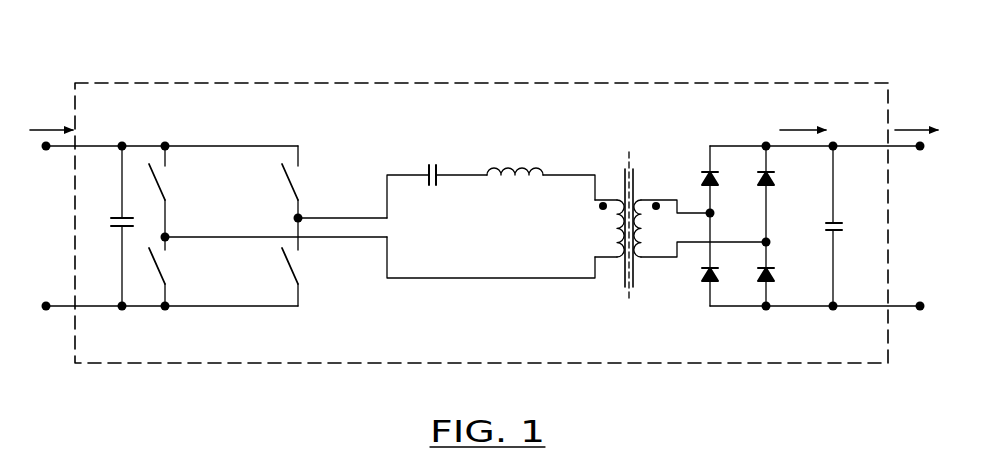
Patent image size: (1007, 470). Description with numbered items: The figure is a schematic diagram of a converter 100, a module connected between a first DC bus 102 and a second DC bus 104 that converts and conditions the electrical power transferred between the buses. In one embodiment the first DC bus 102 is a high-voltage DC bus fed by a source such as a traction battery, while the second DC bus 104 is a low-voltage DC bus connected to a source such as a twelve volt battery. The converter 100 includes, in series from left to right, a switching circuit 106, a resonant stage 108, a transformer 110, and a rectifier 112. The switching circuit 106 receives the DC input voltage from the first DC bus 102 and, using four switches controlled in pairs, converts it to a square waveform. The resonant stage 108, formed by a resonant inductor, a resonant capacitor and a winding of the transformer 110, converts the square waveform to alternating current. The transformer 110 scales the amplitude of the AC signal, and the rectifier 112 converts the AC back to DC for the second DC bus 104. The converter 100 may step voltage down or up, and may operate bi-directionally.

The converter 100 is at (537, 80).
The first DC bus 102 is at (59, 102).
The second DC bus 104 is at (921, 102).
The switching circuit 106 is at (210, 100).
The resonant stage 108 is at (551, 104).
The transformer 110 is at (670, 108).
The rectifier 112 is at (777, 96).